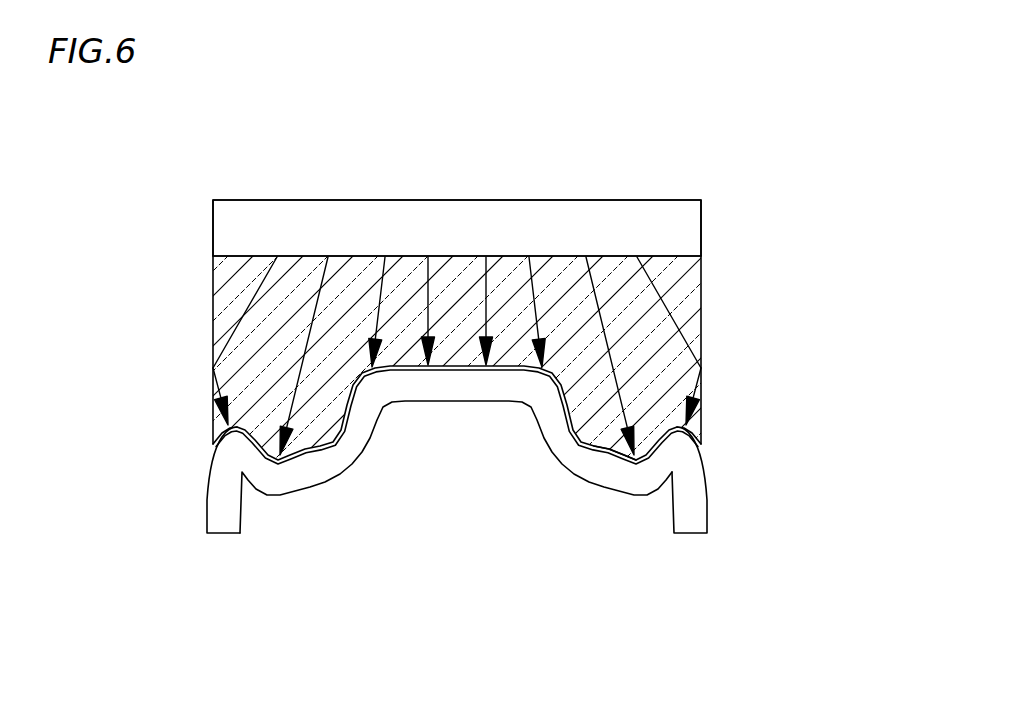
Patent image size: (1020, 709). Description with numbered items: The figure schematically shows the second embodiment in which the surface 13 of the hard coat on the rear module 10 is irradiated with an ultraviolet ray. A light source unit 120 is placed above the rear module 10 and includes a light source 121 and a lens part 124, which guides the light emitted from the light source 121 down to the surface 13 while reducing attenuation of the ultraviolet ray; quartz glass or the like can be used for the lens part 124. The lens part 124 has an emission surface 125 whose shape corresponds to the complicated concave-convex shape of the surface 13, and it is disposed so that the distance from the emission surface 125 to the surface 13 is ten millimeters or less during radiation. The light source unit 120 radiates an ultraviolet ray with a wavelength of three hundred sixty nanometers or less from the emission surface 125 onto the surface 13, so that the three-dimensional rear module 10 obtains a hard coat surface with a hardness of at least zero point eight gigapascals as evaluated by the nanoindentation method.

The rear module 10 is at (322, 498).
The surface of the hard coat 13 is at (702, 428).
The light source unit 120 is at (733, 219).
The light source 121 is at (683, 199).
The lens part 124 is at (702, 305).
The emission surface 125 is at (613, 460).